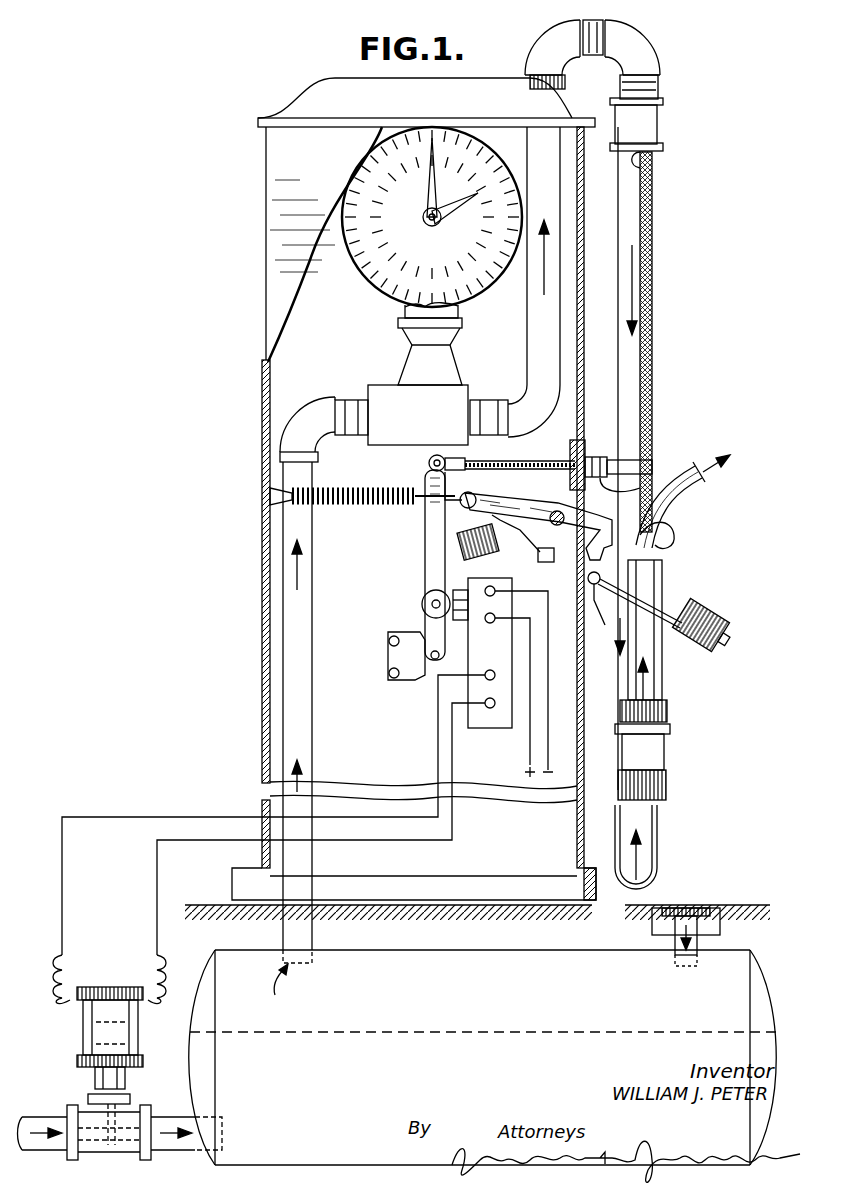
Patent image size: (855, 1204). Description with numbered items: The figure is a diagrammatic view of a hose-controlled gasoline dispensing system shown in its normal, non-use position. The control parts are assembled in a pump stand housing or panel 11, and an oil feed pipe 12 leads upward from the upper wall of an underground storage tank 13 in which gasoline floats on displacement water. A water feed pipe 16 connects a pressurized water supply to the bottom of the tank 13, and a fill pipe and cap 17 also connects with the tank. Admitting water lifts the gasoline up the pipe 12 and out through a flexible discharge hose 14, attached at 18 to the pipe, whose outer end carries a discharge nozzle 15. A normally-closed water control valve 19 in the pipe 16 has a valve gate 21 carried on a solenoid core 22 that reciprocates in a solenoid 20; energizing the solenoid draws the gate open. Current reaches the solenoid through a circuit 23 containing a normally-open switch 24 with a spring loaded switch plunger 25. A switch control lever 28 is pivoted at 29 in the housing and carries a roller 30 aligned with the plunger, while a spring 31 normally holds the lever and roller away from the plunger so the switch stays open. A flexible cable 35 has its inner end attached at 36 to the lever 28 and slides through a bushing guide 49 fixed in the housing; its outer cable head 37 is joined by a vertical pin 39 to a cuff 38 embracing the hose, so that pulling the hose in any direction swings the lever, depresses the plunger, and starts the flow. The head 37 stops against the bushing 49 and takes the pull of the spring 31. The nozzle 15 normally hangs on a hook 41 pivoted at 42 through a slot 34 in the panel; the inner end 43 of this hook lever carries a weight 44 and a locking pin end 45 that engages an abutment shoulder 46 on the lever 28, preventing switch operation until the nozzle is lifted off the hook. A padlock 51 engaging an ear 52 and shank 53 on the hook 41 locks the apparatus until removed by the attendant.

The pump stand housing 11 is at (266, 162).
The oil feed pipe 12 is at (552, 205).
The storage tank 13 is at (222, 962).
The discharge hose 14 is at (652, 305).
The discharge nozzle 15 is at (690, 488).
The water feed pipe 16 is at (40, 1117).
The fill pipe and cap 17 is at (700, 906).
The hose attachment 18 is at (655, 174).
The water control valve 19 is at (150, 1114).
The solenoid 20 is at (140, 1027).
The valve gate 21 is at (130, 1100).
The solenoid core 22 is at (94, 1078).
The circuit 23 is at (140, 926).
The switch 24 is at (478, 730).
The switch plunger 25 is at (453, 595).
The switch control lever 28 is at (425, 556).
The lever pivot 29 is at (418, 682).
The roller 30 is at (422, 604).
The spring 31 is at (360, 490).
The slot 34 is at (578, 508).
The cable 35 is at (490, 476).
The cable inner attachment 36 is at (429, 463).
The cable head 37 is at (596, 456).
The cuff 38 is at (640, 460).
The pin 39 is at (620, 482).
The hook 41 is at (676, 538).
The hook pivot 42 is at (556, 511).
The hook lever inner end 43 is at (524, 532).
The weight 44 is at (472, 554).
The locking pin end 45 is at (462, 506).
The abutment shoulder 46 is at (455, 505).
The bushing guide 49 is at (570, 455).
The padlock 51 is at (716, 605).
The ear 52 is at (594, 586).
The shank 53 is at (606, 630).